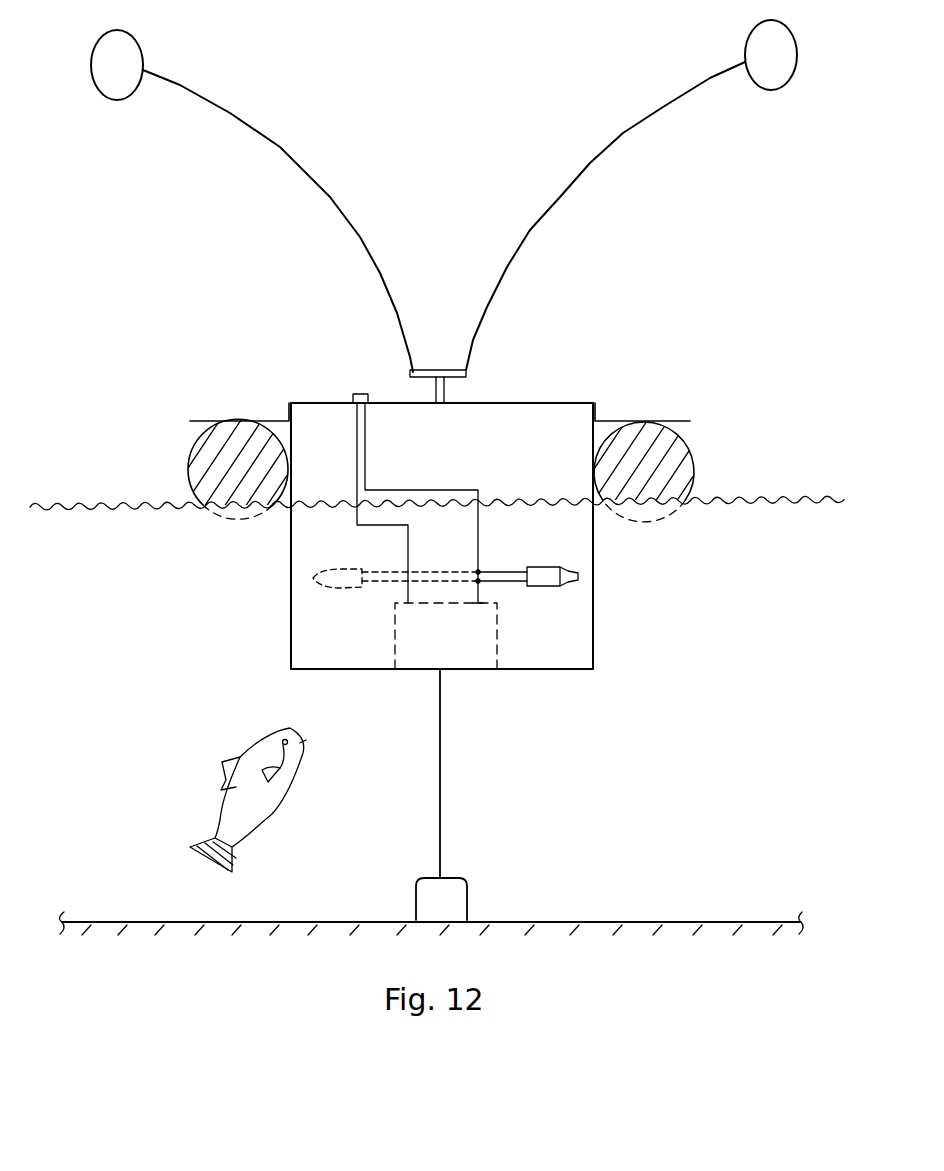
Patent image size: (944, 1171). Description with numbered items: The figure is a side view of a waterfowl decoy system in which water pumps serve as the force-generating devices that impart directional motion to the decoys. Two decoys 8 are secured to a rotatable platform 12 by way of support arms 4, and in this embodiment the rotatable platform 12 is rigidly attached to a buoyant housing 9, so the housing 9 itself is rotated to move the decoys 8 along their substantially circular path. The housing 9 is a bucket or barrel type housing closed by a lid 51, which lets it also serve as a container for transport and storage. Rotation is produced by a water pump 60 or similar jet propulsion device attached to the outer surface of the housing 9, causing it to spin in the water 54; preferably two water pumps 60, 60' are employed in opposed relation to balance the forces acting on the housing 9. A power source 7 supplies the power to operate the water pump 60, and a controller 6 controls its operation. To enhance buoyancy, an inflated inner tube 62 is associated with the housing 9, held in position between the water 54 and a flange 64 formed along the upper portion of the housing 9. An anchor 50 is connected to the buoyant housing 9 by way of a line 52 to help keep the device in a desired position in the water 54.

The decoy 8 is at (90, 67).
The support arm 4 is at (333, 197).
The rotatable platform 12 is at (426, 372).
The controller 6 is at (358, 394).
The lid 51 is at (513, 401).
The flange 64 is at (668, 421).
The inner tube 62 is at (694, 468).
The water pump 60 is at (528, 555).
The water pump 60' is at (389, 562).
The power source 7 is at (497, 638).
The buoyant housing 9 is at (523, 670).
The water 54 is at (117, 690).
The line 52 is at (440, 800).
The anchor 50 is at (467, 898).